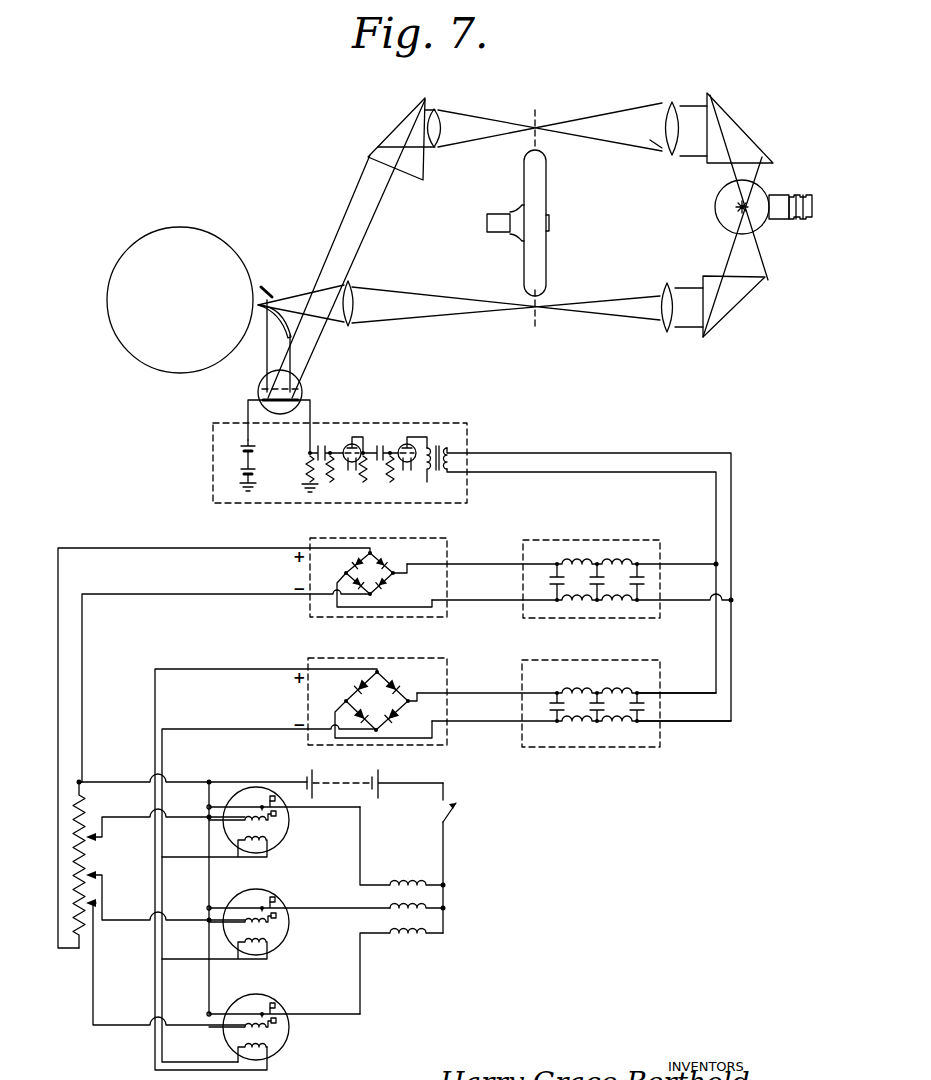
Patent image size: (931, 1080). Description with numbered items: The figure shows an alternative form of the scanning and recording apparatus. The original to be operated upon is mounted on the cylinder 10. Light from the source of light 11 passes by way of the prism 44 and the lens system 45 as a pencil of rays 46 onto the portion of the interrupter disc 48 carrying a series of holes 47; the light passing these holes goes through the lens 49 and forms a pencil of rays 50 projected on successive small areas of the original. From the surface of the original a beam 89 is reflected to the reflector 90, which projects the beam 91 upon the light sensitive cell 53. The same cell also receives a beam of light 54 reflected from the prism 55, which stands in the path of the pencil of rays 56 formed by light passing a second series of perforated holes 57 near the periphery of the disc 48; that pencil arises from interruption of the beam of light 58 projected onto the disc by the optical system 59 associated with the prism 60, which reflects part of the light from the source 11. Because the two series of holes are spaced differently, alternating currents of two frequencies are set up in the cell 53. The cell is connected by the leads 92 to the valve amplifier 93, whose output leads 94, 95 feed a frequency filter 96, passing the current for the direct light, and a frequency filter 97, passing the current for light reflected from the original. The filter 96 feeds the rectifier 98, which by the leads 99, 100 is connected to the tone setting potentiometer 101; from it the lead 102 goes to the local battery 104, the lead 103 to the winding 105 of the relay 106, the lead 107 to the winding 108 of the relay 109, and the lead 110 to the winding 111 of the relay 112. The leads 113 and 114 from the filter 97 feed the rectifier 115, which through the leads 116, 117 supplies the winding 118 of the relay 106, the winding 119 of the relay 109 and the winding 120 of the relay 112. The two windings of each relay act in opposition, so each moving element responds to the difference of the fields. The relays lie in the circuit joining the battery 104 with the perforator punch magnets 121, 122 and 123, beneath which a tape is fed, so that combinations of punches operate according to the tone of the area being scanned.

The cylinder 10 is at (198, 240).
The source of light 11 is at (754, 195).
The prism 44 is at (731, 298).
The lens system 45 is at (667, 323).
The pencil of rays 46 is at (635, 318).
The series of holes 47 is at (538, 311).
The interrupter disc 48 is at (536, 263).
The lens 49 is at (354, 303).
The pencil of rays 50 is at (347, 281).
The light sensitive cell 53 is at (293, 410).
The beam of light 54 is at (357, 221).
The prism 55 is at (420, 167).
The pencil of rays 56 is at (485, 122).
The second series of perforated holes 57 is at (536, 124).
The beam of light 58 is at (625, 122).
The optical system 59 is at (671, 120).
The prism 60 is at (737, 132).
The beam 89 is at (265, 333).
The reflector 90 is at (263, 290).
The beam 91 is at (283, 350).
The leads 92 is at (310, 438).
The valve amplifier 93 is at (267, 488).
The output lead 94 is at (592, 452).
The output lead 95 is at (643, 473).
The frequency filter 96 is at (652, 553).
The frequency filter 97 is at (643, 682).
The rectifier 98 is at (379, 562).
The lead 99 is at (190, 546).
The lead 100 is at (198, 587).
The tone setting potentiometer 101 is at (93, 851).
The lead 102 is at (117, 782).
The lead 103 is at (132, 807).
The local battery 104 is at (330, 775).
The winding 105 is at (271, 823).
The relay 106 is at (211, 843).
The lead 107 is at (125, 922).
The winding 108 is at (271, 920).
The relay 109 is at (233, 930).
The lead 110 is at (123, 1020).
The winding 111 is at (274, 1028).
The relay 112 is at (228, 1033).
The lead 113 is at (487, 688).
The lead 114 is at (493, 722).
The rectifier 115 is at (370, 697).
The lead 116 is at (237, 663).
The lead 117 is at (243, 722).
The winding 118 is at (267, 846).
The winding 119 is at (271, 942).
The winding 120 is at (271, 1052).
The perforator punch magnet 121 is at (412, 874).
The perforator punch magnet 122 is at (427, 917).
The perforator punch magnet 123 is at (427, 940).